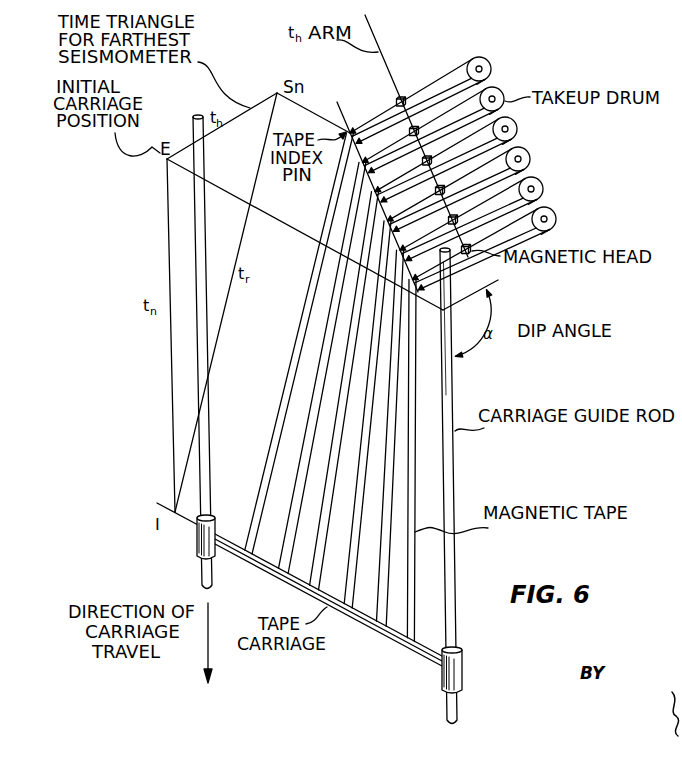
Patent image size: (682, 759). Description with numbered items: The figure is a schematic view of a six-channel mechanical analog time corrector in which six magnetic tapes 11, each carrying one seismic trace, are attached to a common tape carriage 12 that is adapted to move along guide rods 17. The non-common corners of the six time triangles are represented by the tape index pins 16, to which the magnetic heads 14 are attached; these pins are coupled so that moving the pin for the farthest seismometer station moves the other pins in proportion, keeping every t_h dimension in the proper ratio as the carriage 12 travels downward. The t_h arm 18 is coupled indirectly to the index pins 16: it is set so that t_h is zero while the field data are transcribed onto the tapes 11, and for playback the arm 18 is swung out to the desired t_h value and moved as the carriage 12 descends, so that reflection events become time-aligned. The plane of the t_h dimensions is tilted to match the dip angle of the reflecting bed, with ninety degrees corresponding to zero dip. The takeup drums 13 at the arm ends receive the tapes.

The tape 11 is at (323, 510).
The carriage 12 is at (393, 643).
The takeup drum 13 is at (491, 72).
The magnetic head 14 is at (406, 100).
The tape index pin 16 is at (366, 163).
The guide rod 17 is at (200, 572).
The t_h arm 18 is at (379, 43).